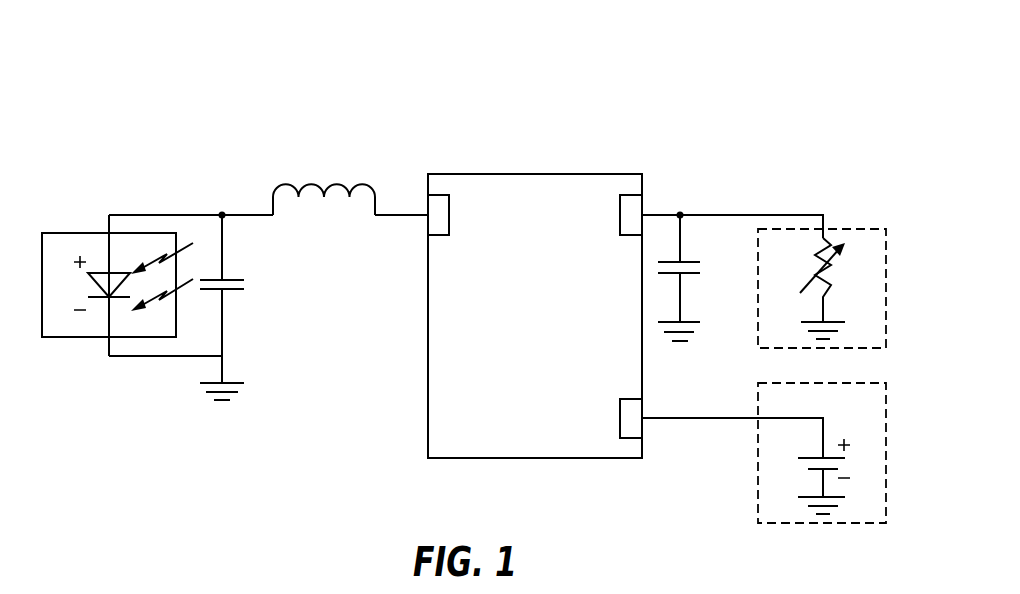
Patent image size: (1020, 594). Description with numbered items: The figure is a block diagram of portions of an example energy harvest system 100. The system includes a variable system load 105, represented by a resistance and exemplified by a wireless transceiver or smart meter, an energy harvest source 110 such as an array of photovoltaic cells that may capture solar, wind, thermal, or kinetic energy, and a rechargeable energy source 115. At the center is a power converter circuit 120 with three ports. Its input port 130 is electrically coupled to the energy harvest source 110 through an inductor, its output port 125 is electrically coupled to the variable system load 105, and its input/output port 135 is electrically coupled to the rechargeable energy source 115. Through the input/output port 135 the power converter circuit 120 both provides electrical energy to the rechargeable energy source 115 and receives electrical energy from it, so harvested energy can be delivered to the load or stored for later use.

The energy harvest system 100 is at (108, 86).
The variable system load 105 is at (852, 229).
The energy harvest source 110 is at (82, 233).
The rechargeable energy source 115 is at (822, 383).
The power converter circuit 120 is at (535, 174).
The output port 125 is at (620, 215).
The input port 130 is at (449, 212).
The input/output port 135 is at (620, 418).